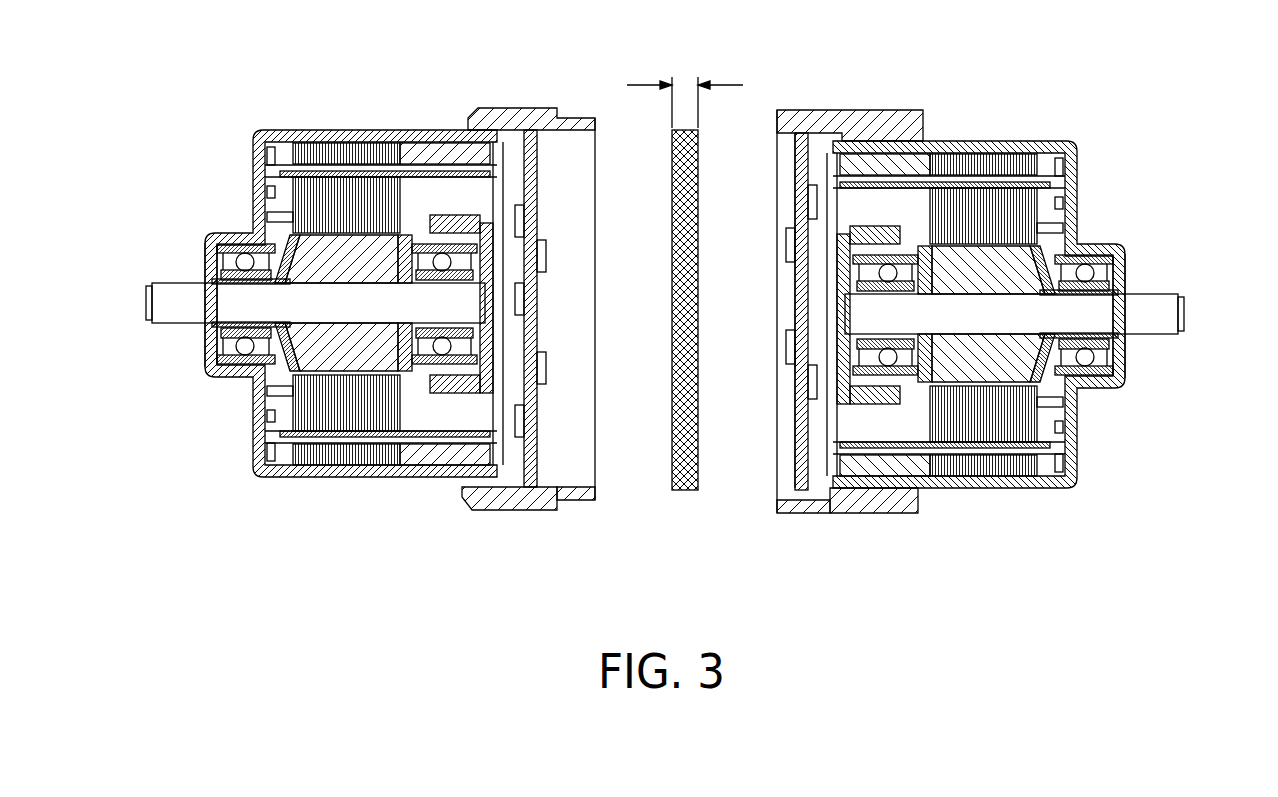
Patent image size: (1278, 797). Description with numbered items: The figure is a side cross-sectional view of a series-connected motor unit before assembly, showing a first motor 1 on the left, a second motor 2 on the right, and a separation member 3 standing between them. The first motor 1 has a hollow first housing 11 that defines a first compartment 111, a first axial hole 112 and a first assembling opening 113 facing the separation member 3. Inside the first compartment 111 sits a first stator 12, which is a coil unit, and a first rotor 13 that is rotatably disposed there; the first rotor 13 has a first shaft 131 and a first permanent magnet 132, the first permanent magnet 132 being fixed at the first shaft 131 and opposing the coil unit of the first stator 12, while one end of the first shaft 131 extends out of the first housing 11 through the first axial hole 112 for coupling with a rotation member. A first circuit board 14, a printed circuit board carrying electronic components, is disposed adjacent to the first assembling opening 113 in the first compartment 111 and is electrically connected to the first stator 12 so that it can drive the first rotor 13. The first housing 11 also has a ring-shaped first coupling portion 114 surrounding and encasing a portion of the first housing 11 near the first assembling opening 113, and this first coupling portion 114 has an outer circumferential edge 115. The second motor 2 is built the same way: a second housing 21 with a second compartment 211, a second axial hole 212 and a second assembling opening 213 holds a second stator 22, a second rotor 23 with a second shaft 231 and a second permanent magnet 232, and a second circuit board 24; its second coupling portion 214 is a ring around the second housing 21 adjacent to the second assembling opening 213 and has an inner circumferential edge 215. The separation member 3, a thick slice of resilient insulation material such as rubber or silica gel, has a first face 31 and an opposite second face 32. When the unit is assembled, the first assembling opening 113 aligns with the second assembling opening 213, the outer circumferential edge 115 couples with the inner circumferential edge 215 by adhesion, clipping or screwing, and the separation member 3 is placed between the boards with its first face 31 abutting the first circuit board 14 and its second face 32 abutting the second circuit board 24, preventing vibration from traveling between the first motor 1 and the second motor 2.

The first motor 1 is at (395, 322).
The first housing 11 is at (327, 257).
The first compartment 111 is at (547, 322).
The first axial hole 112 is at (207, 338).
The first assembling opening 113 is at (597, 490).
The first coupling portion 114 is at (510, 502).
The outer circumferential edge 115 is at (563, 498).
The first stator 12 is at (354, 463).
The first rotor 13 is at (315, 420).
The first shaft 131 is at (262, 298).
The first permanent magnet 132 is at (325, 372).
The first circuit board 14 is at (533, 295).
The second motor 2 is at (992, 319).
The second housing 21 is at (1025, 259).
The second compartment 211 is at (867, 319).
The second axial hole 212 is at (1123, 343).
The second assembling opening 213 is at (774, 495).
The second coupling portion 214 is at (875, 502).
The inner circumferential edge 215 is at (790, 500).
The second stator 22 is at (1012, 430).
The second rotor 23 is at (1054, 362).
The second shaft 231 is at (1092, 326).
The second permanent magnet 232 is at (1013, 375).
The second circuit board 24 is at (795, 297).
The separation member 3 is at (685, 328).
The first face 31 is at (668, 493).
The second face 32 is at (703, 493).